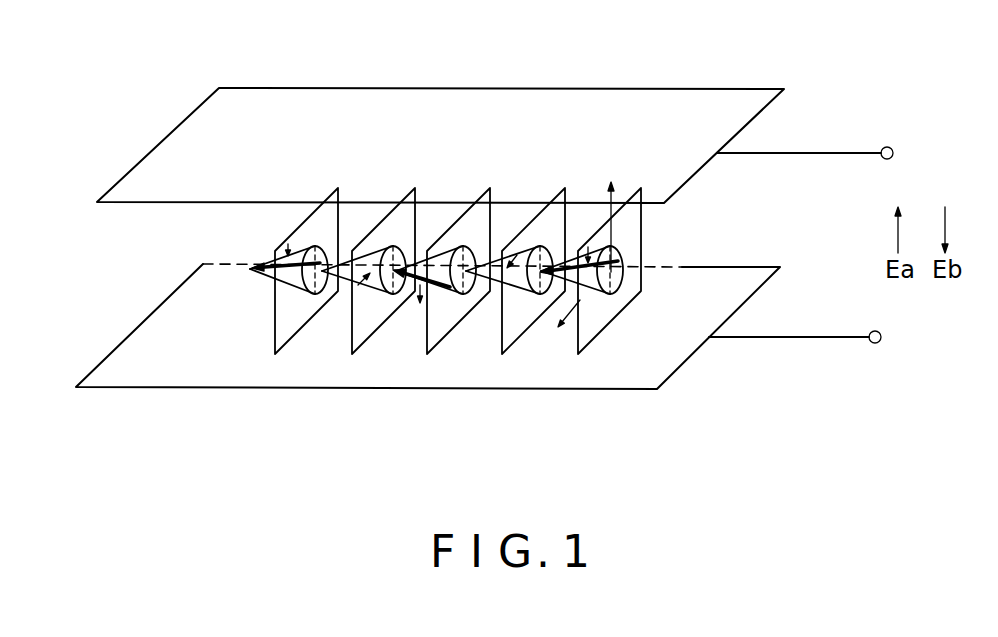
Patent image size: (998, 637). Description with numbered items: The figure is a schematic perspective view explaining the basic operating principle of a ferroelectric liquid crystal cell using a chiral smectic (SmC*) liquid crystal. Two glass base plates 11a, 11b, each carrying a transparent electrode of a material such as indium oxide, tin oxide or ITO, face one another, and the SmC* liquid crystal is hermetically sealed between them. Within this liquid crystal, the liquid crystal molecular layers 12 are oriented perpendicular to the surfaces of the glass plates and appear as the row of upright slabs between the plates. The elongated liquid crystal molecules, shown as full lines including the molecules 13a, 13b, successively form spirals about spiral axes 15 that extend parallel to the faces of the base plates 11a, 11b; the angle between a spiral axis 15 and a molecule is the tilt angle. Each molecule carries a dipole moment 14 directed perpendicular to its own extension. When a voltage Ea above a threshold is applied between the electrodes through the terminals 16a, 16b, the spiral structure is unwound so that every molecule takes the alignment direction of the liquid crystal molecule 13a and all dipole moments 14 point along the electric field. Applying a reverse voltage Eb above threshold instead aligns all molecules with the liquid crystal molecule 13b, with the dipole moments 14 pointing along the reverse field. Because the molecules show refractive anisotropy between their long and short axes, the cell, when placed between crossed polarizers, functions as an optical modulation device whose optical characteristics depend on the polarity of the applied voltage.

The base plate 11a is at (740, 103).
The base plate 11b is at (727, 298).
The liquid crystal molecular layers 12 is at (627, 235).
The liquid crystal molecule 13a is at (277, 281).
The liquid crystal molecule 13b is at (445, 288).
The dipole moment 14 is at (303, 233).
The spiral axis 15 is at (668, 270).
The terminal 16a is at (887, 147).
The terminal 16b is at (877, 344).